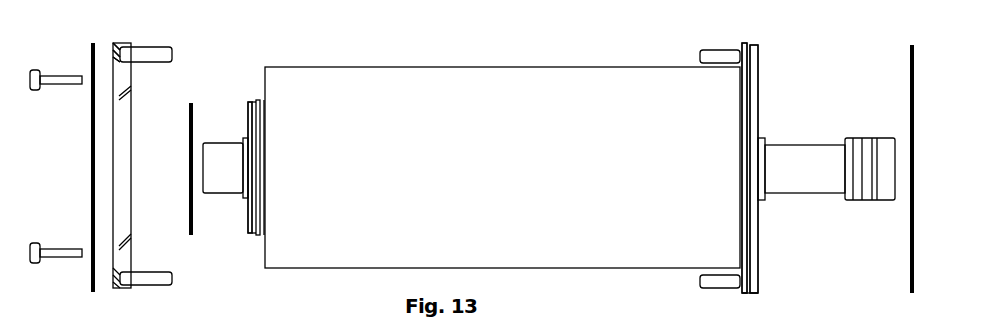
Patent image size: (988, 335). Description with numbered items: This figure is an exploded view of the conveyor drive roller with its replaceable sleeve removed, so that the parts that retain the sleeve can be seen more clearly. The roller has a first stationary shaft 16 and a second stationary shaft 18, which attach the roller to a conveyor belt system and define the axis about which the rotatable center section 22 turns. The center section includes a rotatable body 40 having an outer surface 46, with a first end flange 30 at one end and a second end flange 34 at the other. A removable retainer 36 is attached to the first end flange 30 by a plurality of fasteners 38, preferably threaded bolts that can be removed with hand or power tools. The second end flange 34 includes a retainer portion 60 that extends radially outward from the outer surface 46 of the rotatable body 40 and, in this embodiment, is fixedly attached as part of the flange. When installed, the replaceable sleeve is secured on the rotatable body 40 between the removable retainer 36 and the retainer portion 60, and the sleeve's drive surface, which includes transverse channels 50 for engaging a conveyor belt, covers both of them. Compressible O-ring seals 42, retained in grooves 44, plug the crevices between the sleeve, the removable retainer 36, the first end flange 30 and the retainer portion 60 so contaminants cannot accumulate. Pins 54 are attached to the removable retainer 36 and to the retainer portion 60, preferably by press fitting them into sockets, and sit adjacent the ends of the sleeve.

The first stationary shaft 16 is at (220, 196).
The second stationary shaft 18 is at (798, 145).
The rotatable center section 22 is at (465, 50).
The first end flange 30 is at (264, 90).
The second end flange 34 is at (758, 97).
The removable retainer 36 is at (131, 220).
The fasteners 38 is at (64, 90).
The rotatable body 40 is at (583, 67).
The O-ring seals 42 is at (92, 62).
The grooves 44 is at (120, 47).
The outer surface 46 is at (482, 171).
The transverse channels 50 is at (758, 62).
The pins 54 is at (170, 50).
The retainer portion 60 is at (760, 282).